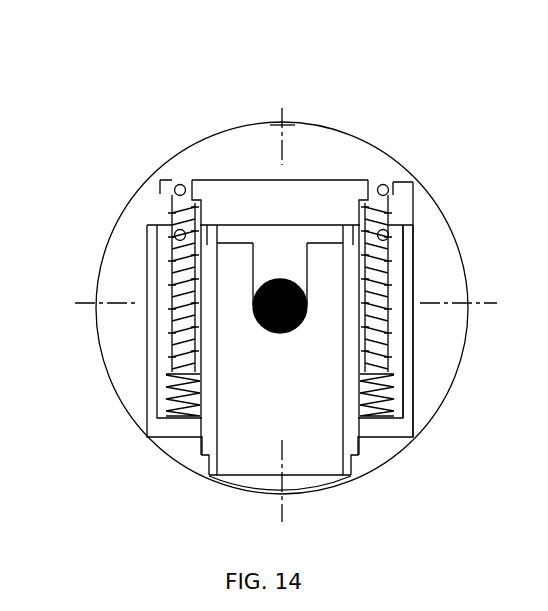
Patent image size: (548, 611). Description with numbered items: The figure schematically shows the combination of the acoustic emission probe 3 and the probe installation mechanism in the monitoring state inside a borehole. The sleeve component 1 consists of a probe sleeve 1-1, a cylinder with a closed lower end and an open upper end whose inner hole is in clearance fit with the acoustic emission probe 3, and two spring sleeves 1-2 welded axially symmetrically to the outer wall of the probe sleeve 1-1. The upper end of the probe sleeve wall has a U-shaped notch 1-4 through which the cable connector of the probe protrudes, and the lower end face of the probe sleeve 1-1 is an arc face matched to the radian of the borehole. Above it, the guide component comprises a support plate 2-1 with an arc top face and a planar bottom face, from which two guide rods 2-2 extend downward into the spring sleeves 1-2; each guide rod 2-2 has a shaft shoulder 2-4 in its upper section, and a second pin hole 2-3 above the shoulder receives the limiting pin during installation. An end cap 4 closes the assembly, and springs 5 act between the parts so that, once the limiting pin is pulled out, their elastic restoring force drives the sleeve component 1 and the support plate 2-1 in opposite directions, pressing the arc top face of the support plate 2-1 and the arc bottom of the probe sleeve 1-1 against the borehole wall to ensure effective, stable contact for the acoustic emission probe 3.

The sleeve component 1 is at (353, 447).
The probe sleeve 1-1 is at (332, 481).
The spring sleeve 1-2 is at (403, 272).
The notch 1-4 is at (307, 270).
The support plate 2-1 is at (268, 152).
The guide rod 2-2 is at (187, 290).
The second pin hole 2-3 is at (178, 235).
The shaft shoulder 2-4 is at (168, 202).
The acoustic emission probe 3 is at (257, 418).
The end cap 4 is at (271, 232).
The spring 5 is at (387, 395).